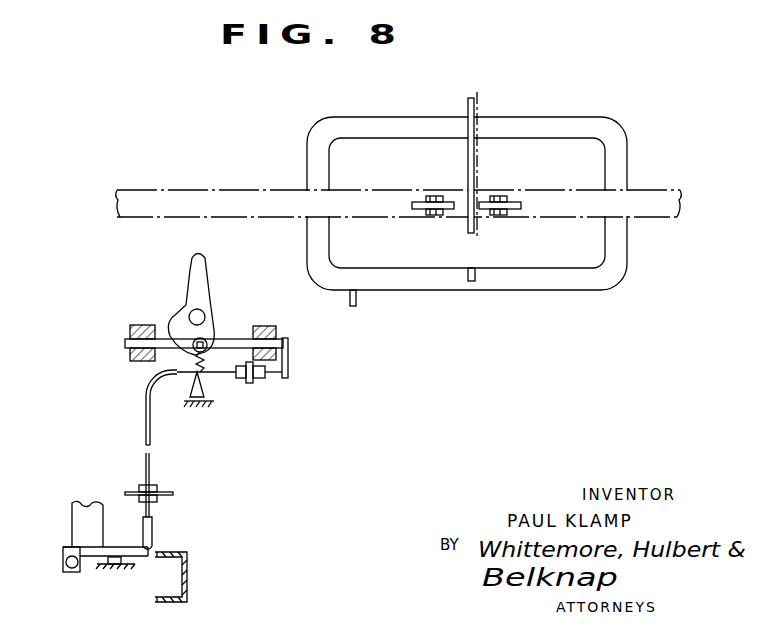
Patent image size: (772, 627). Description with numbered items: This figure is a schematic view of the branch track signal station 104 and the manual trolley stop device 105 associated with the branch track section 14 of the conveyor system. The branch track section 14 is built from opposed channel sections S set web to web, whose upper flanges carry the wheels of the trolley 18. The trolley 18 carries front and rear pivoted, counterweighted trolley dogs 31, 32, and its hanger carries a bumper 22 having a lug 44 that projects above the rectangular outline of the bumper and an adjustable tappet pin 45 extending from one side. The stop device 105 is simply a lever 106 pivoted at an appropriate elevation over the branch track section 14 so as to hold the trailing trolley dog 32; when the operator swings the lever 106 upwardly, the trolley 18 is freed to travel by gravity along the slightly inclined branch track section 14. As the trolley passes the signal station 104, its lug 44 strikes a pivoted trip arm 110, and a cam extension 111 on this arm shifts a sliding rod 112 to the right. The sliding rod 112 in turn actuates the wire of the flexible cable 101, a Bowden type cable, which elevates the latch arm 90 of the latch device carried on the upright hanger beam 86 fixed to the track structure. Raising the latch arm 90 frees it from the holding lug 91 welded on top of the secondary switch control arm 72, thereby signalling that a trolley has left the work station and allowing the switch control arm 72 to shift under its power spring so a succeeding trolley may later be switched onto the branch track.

The branch track section 14 is at (244, 188).
The trolley 18 is at (503, 216).
The bumper 22 is at (478, 290).
The front trolley dog 31 is at (440, 202).
The rear trolley dog 32 is at (507, 200).
The lug 44 is at (475, 276).
The adjustable tappet pin 45 is at (356, 300).
The secondary switch control arm 72 is at (100, 570).
The hanger beam 86 is at (82, 520).
The latch arm 90 is at (117, 548).
The holding lug 91 is at (118, 566).
The flexible cable 101 is at (150, 436).
The branch track signal station 104 is at (232, 342).
The trolley stop device 105 is at (482, 101).
The lever 106 is at (466, 228).
The pivoted trip arm 110 is at (198, 283).
The cam extension 111 is at (186, 333).
The sliding rod 112 is at (228, 340).
The channel section S is at (188, 598).